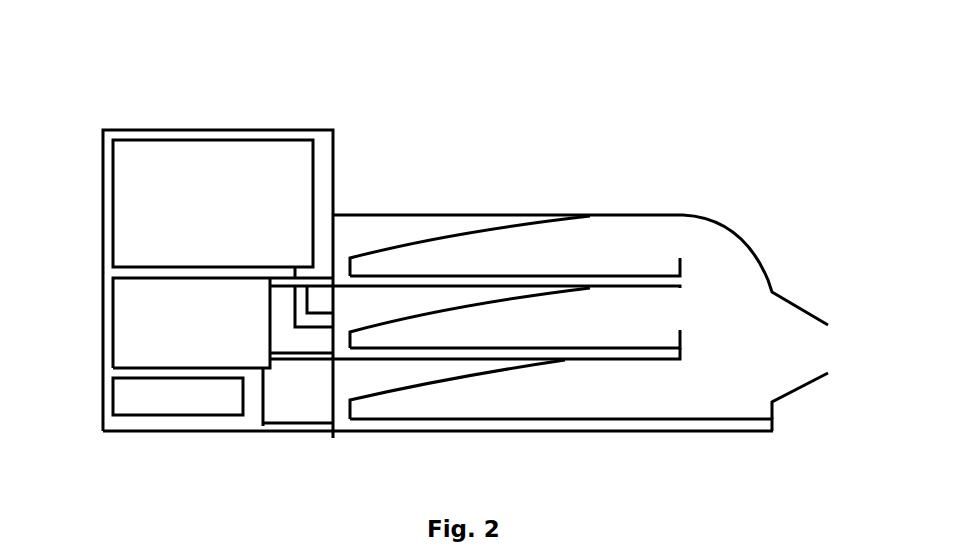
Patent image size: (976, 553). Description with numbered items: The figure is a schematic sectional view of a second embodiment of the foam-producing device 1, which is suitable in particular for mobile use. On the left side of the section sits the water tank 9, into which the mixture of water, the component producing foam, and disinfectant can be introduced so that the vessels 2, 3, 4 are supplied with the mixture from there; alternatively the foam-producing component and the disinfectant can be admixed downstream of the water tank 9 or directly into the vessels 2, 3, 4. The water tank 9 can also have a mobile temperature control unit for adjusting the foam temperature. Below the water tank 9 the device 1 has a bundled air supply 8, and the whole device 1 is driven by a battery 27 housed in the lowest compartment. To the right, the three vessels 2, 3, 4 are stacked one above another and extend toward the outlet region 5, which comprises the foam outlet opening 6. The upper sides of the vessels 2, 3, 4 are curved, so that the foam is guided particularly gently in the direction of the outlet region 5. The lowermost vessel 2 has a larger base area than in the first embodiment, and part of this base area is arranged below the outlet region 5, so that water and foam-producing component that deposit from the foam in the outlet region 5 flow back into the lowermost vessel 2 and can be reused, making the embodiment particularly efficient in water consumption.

The device 1 is at (695, 157).
The lowermost vessel 2 is at (610, 402).
The vessel 3 is at (522, 325).
The vessel 4 is at (540, 244).
The outlet region 5 is at (732, 295).
The foam outlet opening 6 is at (797, 352).
The bundled air supply 8 is at (130, 312).
The water tank 9 is at (180, 163).
The battery 27 is at (128, 394).